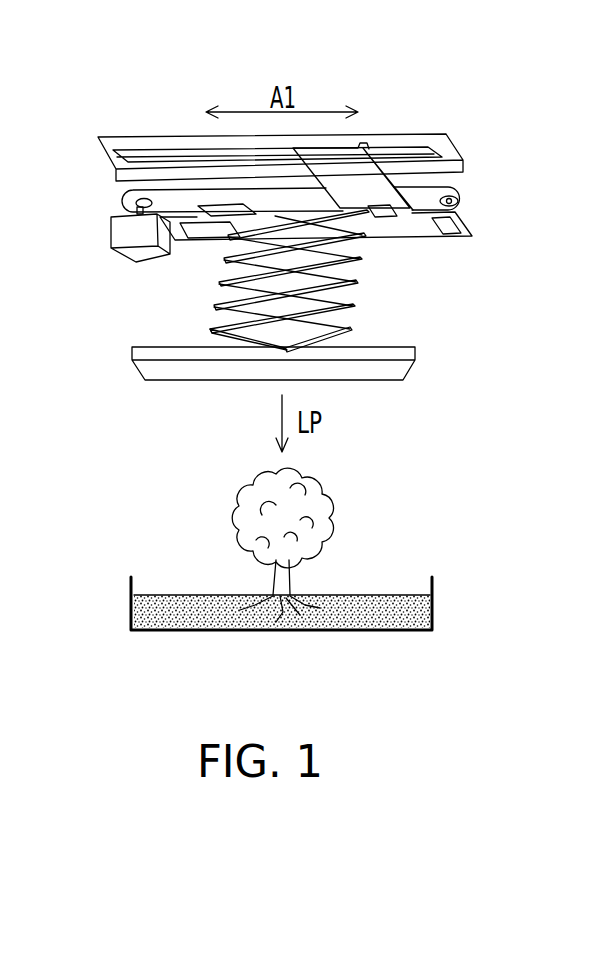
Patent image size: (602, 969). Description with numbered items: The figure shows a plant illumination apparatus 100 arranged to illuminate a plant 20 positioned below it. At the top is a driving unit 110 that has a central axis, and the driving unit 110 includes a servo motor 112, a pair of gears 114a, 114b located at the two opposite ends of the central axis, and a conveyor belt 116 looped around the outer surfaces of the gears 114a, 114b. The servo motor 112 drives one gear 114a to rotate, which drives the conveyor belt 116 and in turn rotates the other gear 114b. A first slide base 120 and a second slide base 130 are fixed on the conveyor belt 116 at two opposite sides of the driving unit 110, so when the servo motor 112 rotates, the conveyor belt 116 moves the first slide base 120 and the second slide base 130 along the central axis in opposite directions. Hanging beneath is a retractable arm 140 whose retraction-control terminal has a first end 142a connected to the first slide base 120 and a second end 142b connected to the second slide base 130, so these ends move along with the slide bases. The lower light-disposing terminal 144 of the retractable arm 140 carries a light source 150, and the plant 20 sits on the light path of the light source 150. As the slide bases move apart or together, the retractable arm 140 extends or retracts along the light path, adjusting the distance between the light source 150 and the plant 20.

The plant illumination apparatus 100 is at (568, 670).
The driving unit 110 is at (485, 199).
The servo motor 112 is at (133, 262).
The gear 114a is at (125, 198).
The gear 114b is at (428, 208).
The conveyor belt 116 is at (172, 195).
The first slide base 120 is at (350, 163).
The second slide base 130 is at (225, 235).
The retractable arm 140 is at (222, 325).
The first end 142a is at (380, 212).
The second end 142b is at (237, 208).
The light-disposing terminal 144 is at (352, 332).
The light source 150 is at (155, 366).
The plant 20 is at (330, 543).